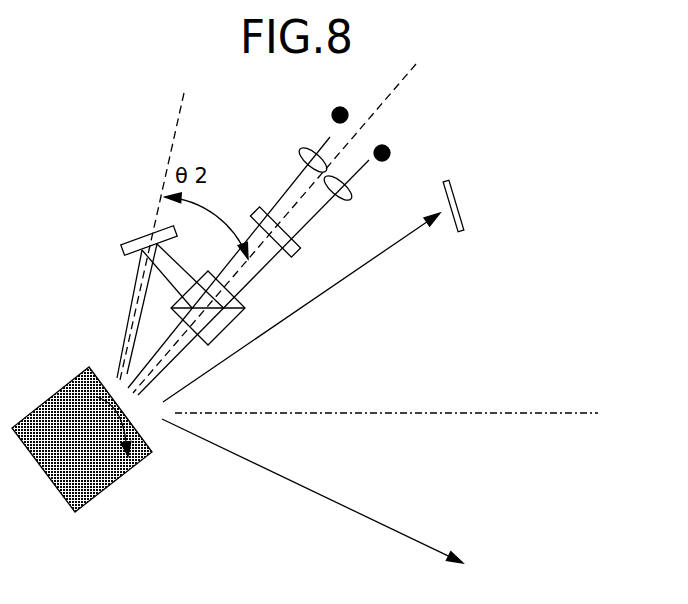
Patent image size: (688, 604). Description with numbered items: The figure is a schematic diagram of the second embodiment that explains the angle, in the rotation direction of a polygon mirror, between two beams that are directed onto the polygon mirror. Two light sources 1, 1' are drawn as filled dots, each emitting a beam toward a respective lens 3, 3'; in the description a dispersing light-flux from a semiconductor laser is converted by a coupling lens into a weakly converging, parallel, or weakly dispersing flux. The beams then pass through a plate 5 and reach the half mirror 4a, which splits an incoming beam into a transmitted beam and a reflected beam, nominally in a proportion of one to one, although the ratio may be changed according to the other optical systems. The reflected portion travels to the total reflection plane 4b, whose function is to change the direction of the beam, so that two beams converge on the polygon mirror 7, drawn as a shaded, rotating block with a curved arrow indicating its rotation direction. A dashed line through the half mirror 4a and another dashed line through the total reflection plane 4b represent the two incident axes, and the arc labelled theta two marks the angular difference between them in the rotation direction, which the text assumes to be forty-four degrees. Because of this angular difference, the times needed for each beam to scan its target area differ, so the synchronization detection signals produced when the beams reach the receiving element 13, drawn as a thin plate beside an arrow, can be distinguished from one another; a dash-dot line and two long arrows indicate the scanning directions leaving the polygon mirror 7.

The light source 1 is at (395, 153).
The second light source 1' is at (351, 97).
The lens 3 is at (343, 199).
The second lens 3' is at (299, 147).
The half mirror 4a is at (235, 318).
The total reflection plane 4b is at (130, 240).
The wave plate 5 is at (295, 255).
The object (rotating disk) 7 is at (82, 425).
The mirror 13 is at (456, 192).